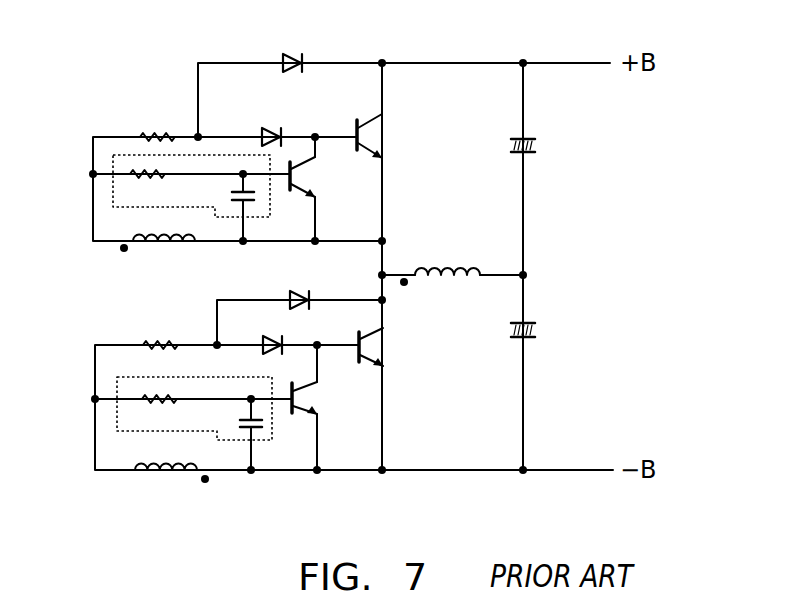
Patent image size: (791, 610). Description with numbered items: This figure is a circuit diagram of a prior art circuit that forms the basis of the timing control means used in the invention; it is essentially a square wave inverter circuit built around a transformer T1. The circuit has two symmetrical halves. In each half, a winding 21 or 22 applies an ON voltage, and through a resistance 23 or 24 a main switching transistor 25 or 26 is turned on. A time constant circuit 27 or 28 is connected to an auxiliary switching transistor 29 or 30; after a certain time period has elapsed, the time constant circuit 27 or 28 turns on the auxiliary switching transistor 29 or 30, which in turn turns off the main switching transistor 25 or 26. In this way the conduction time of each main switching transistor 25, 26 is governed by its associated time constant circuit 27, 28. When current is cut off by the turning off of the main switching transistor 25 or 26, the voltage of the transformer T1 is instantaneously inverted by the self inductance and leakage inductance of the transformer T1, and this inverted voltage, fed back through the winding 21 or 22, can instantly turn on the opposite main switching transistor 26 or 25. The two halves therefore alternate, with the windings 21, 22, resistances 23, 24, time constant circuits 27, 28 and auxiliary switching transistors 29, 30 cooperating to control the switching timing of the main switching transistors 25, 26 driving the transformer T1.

The winding 21 is at (147, 246).
The winding 22 is at (160, 475).
The resistance 23 is at (152, 134).
The resistance 24 is at (170, 341).
The main switching transistor 25 is at (375, 131).
The main switching transistor 26 is at (373, 340).
The time constant circuit 27 is at (271, 214).
The time constant circuit 28 is at (273, 423).
The auxiliary switching transistor 29 is at (303, 178).
The auxiliary switching transistor 30 is at (300, 398).
The transformer T1 is at (445, 267).